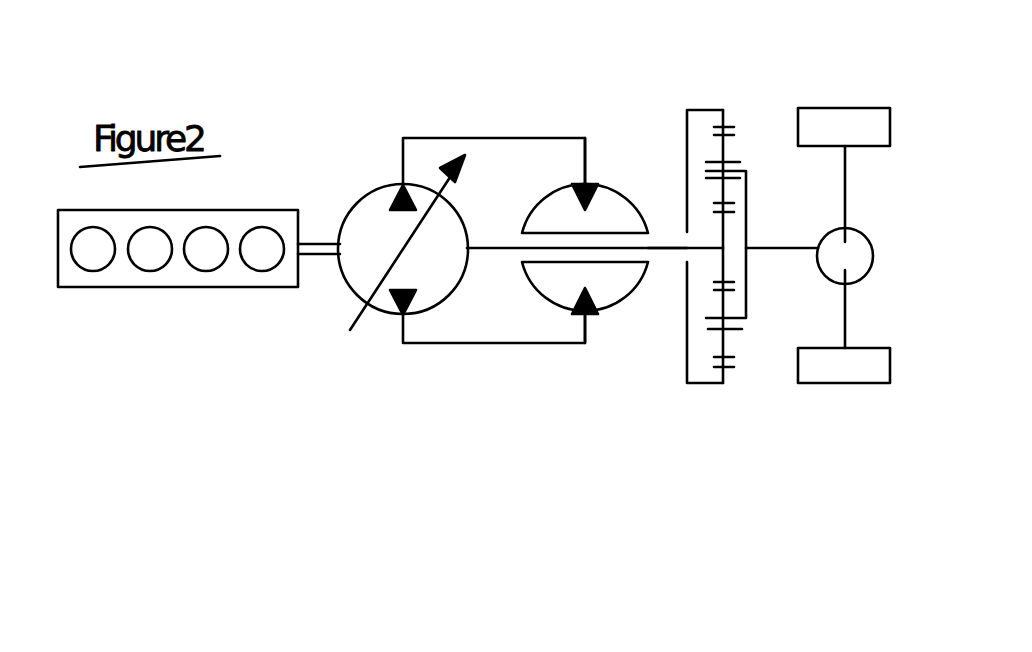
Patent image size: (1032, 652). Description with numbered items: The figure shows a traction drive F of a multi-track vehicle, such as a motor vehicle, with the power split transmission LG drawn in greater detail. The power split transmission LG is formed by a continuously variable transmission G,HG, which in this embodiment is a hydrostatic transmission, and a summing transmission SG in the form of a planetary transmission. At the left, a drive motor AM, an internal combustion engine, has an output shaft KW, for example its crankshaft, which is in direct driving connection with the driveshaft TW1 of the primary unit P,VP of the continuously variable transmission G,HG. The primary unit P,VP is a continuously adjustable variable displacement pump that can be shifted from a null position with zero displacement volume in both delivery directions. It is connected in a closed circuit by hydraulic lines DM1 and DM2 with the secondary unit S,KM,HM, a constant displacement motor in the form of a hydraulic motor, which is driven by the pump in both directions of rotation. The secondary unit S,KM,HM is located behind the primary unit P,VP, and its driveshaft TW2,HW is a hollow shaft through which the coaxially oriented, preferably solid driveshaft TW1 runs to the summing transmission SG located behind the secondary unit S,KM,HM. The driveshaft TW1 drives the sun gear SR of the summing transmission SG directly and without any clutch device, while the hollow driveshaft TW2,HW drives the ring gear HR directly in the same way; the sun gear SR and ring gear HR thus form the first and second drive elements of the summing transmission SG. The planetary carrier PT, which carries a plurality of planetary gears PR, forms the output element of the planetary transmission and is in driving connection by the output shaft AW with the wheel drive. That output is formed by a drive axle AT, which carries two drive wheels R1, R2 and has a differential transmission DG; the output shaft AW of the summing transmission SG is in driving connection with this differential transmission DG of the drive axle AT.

The drive motor AM is at (70, 273).
The output shaft KW is at (317, 238).
The primary unit / variable displacement pump P,VP is at (360, 267).
The hydraulic line DM1 is at (410, 137).
The hydraulic line DM2 is at (449, 345).
The driveshaft TW1 is at (483, 248).
The driveshaft / hollow shaft TW2,HW is at (660, 232).
The secondary unit / constant displacement motor / hydraulic motor S,KM,HM is at (557, 283).
The sun gear SR is at (723, 258).
The summing transmission SG is at (710, 396).
The ring gear HR is at (723, 110).
The planetary gears PR is at (728, 150).
The planetary carrier PT is at (746, 187).
The driveshaft / output shaft AW is at (778, 250).
The differential transmission DG is at (870, 260).
The drive axle AT is at (845, 183).
The drive wheel R1 is at (837, 125).
The drive wheel R2 is at (843, 370).
The continuously variable transmission / hydrostatic transmission G,HG is at (400, 393).
The traction drive F is at (207, 424).
The power split transmission LG is at (737, 470).